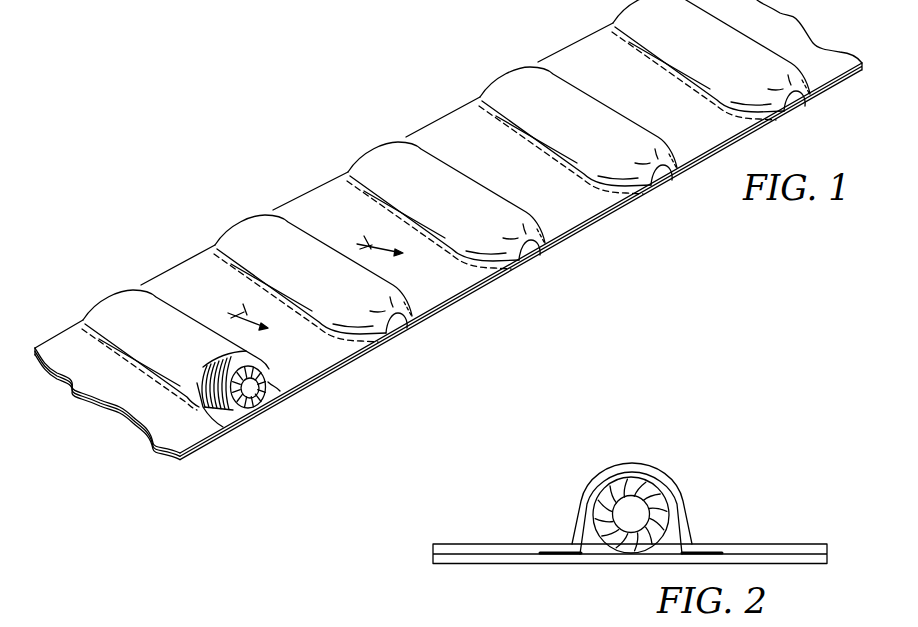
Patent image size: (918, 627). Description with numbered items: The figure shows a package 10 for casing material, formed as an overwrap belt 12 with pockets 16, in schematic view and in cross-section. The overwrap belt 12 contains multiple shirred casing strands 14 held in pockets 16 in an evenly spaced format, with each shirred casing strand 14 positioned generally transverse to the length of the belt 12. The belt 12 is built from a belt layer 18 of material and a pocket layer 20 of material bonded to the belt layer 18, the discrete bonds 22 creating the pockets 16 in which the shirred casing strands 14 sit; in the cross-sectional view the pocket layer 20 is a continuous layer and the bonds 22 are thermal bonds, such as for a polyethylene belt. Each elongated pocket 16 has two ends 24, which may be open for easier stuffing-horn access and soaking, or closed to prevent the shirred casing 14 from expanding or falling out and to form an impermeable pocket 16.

In FIG. 1, the package 10 is at (448, 230).
In FIG. 1, the overwrap belt 12 is at (605, 230).
In FIG. 1, the shirred casing strand 14 is at (268, 390).
In FIG. 2, the shirred casing strand 14 is at (600, 542).
In FIG. 1, the pocket 16 is at (100, 290).
In FIG. 2, the pocket 16 is at (630, 484).
In FIG. 2, the belt layer 18 is at (503, 563).
In FIG. 2, the pocket layer 20 is at (668, 477).
In FIG. 2, the bond 22 is at (558, 543).
In FIG. 1, the end 24 is at (350, 158).